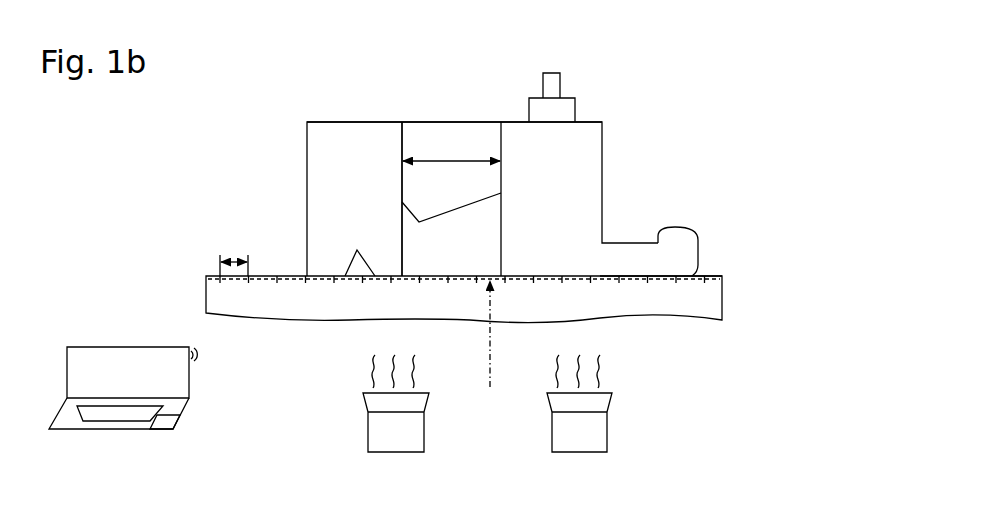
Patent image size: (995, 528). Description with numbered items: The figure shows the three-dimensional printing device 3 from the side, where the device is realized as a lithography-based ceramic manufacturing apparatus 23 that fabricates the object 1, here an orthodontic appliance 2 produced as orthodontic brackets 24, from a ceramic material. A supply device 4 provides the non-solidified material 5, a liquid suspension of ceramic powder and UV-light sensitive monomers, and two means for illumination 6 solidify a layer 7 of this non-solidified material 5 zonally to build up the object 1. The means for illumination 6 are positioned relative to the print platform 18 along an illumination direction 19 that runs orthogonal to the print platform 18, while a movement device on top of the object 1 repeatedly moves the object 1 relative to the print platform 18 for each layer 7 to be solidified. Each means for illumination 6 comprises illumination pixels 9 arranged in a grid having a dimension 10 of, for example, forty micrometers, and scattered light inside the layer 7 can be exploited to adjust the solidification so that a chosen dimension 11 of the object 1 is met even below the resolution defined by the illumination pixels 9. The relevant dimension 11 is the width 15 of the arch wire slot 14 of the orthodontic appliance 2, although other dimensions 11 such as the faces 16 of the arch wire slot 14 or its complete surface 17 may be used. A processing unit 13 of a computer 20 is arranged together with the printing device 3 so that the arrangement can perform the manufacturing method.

The object 1 is at (399, 165).
The orthodontic appliance 2 is at (399, 165).
The orthodontic brackets 24 is at (399, 165).
The 3D-printing device 3 is at (435, 283).
The supply device 4 is at (435, 283).
The non-solidified material 5 is at (227, 298).
The means for illumination 6 is at (563, 427).
The layer 7 is at (720, 277).
The illumination pixels 9 is at (360, 249).
The dimension 10 is at (234, 253).
The dimension 11 is at (445, 122).
The processing unit 13 is at (173, 422).
The arch wire slot 14 is at (418, 131).
The width 15 is at (451, 148).
The faces 16 is at (451, 224).
The complete surface 17 is at (408, 258).
The print platform 18 is at (710, 266).
The illumination direction 19 is at (474, 335).
The computer 20 is at (107, 358).
The lithography-based ceramic manufacturing apparatus 23 is at (735, 348).